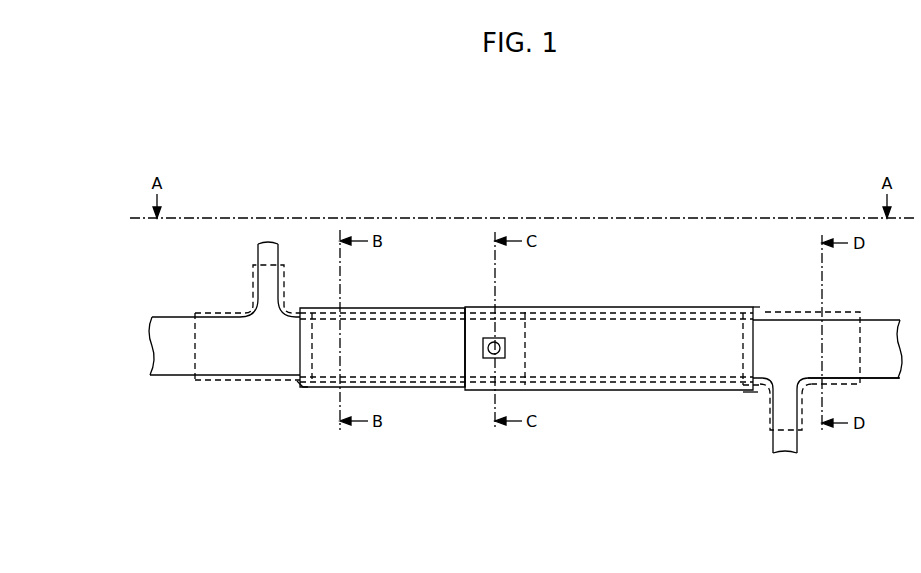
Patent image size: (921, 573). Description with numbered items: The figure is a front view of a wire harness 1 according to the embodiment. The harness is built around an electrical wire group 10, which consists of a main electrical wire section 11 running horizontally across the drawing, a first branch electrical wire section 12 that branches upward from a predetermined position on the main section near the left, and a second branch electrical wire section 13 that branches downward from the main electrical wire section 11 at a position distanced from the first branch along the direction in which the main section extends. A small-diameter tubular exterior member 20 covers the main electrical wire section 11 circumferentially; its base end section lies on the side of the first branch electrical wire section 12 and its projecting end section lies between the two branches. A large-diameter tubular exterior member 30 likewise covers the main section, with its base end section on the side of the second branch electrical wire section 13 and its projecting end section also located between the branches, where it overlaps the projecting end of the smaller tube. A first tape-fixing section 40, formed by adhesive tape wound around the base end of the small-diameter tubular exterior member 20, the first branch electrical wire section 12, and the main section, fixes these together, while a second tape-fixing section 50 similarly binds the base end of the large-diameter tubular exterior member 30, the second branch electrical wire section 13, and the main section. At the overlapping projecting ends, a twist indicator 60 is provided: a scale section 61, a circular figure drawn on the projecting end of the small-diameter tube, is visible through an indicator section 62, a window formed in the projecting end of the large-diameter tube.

The wire harness 1 is at (546, 453).
The electrical wire group 10 is at (882, 307).
The main electrical wire section 11 is at (882, 379).
The first branch electrical wire section 12 is at (262, 256).
The second branch electrical wire section 13 is at (782, 444).
The small-diameter tubular exterior member 20 is at (398, 308).
The large-diameter tubular exterior member 30 is at (619, 307).
The first tape-fixing section 40 is at (250, 382).
The second tape-fixing section 50 is at (780, 311).
The twist indicator 60 is at (507, 323).
The scale section 61 is at (494, 347).
The indicator section 62 is at (490, 358).